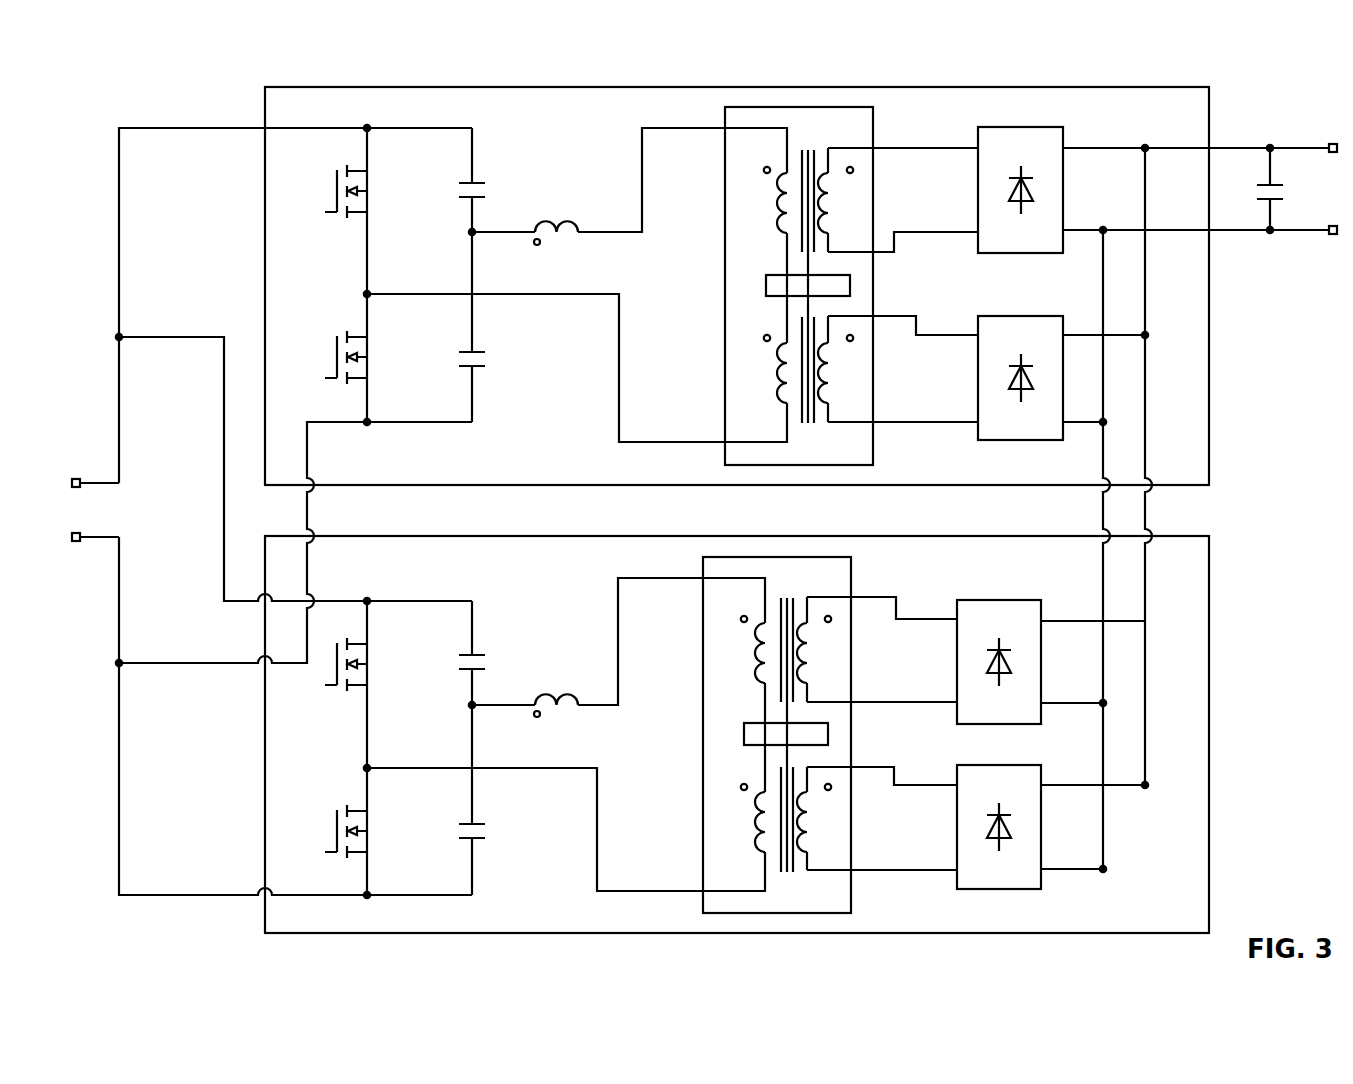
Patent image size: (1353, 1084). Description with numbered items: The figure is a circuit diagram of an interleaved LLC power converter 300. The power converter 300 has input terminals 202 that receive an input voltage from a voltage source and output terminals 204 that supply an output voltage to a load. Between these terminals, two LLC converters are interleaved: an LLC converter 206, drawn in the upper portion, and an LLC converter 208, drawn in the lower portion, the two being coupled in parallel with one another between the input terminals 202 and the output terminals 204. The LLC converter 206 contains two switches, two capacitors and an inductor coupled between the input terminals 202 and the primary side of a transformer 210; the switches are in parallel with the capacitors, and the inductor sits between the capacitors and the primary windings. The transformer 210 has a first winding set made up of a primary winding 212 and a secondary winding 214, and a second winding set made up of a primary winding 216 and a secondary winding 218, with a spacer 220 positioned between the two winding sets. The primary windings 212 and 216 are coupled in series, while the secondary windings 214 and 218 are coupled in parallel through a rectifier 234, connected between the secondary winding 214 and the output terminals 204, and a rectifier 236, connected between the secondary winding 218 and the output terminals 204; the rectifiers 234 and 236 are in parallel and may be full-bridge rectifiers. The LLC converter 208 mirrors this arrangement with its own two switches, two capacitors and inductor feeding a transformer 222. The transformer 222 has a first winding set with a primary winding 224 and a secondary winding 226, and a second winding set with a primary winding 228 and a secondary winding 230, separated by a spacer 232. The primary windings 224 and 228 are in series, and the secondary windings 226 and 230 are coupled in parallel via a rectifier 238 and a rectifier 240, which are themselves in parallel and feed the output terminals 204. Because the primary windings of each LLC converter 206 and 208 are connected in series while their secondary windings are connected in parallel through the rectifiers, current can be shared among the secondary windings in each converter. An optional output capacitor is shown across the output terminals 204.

The interleaved LLC power converter 300 is at (214, 76).
The input terminals 202 is at (80, 488).
The output terminals 204 is at (1317, 147).
The LLC converter 206 is at (758, 87).
The LLC converter 208 is at (760, 536).
The transformer 210 is at (878, 130).
The primary winding 212 is at (756, 176).
The secondary winding 214 is at (839, 199).
The primary winding 216 is at (773, 368).
The secondary winding 218 is at (839, 371).
The spacer 220 is at (760, 276).
The transformer 222 is at (838, 587).
The primary winding 224 is at (751, 656).
The secondary winding 226 is at (819, 661).
The primary winding 228 is at (751, 826).
The secondary winding 230 is at (819, 827).
The spacer 232 is at (740, 728).
The rectifier 234 is at (1063, 138).
The rectifier 236 is at (1020, 316).
The rectifier 238 is at (998, 600).
The rectifier 240 is at (1030, 888).